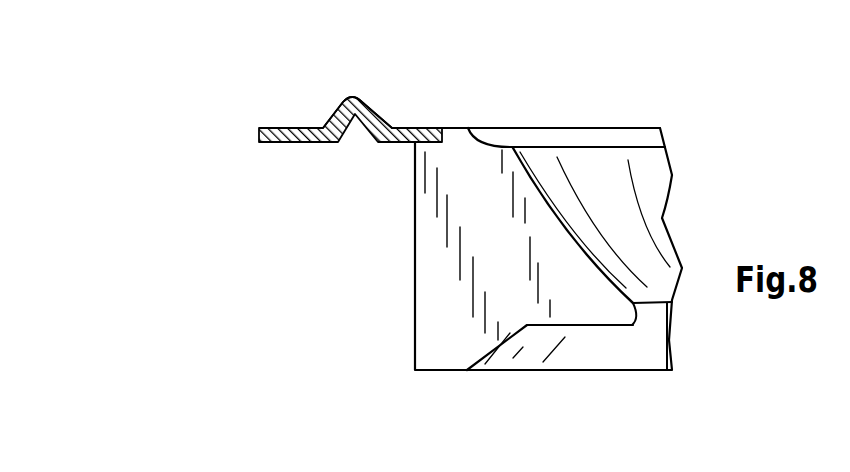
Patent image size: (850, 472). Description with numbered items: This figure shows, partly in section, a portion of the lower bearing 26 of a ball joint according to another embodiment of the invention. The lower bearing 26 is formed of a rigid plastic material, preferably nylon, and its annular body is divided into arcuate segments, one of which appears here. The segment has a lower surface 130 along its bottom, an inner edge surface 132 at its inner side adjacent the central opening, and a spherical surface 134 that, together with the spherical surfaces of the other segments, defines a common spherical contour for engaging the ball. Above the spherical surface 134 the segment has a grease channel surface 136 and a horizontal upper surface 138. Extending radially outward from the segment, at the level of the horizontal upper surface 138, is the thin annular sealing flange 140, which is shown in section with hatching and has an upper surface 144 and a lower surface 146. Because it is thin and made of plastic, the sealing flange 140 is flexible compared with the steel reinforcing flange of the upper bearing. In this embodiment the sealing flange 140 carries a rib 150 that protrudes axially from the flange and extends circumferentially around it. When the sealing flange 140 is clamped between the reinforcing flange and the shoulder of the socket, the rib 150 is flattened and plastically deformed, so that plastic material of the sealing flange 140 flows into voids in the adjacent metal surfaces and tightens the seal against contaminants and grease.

The lower bearing 26 is at (414, 246).
The lower surface 130 is at (528, 352).
The inner edge surface 132 is at (650, 312).
The spherical surface 134 is at (628, 218).
The grease channel surface 136 is at (503, 138).
The horizontal upper surface 138 is at (443, 128).
The sealing flange 140 is at (258, 136).
The upper surface 144 is at (302, 128).
The lower surface 146 is at (302, 143).
The rib 150 is at (364, 102).